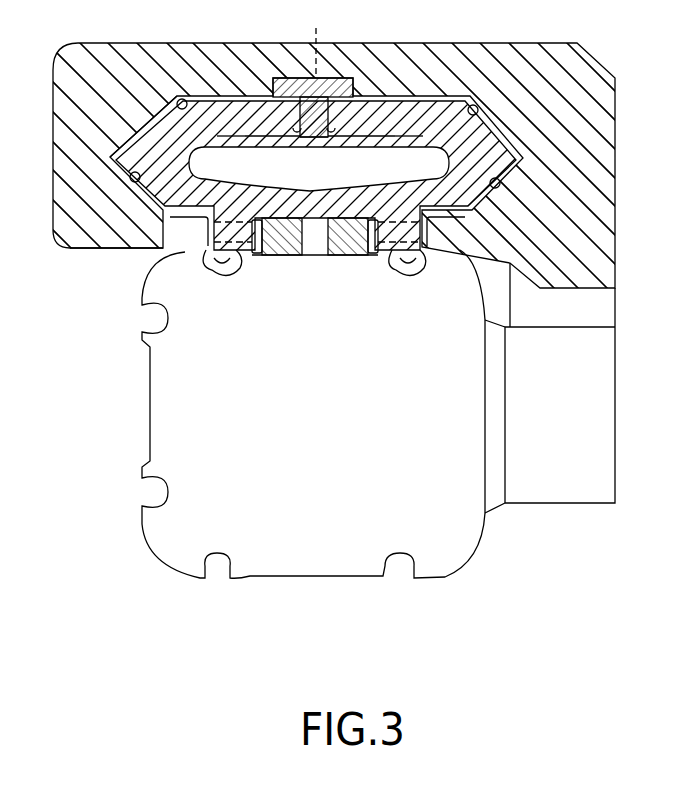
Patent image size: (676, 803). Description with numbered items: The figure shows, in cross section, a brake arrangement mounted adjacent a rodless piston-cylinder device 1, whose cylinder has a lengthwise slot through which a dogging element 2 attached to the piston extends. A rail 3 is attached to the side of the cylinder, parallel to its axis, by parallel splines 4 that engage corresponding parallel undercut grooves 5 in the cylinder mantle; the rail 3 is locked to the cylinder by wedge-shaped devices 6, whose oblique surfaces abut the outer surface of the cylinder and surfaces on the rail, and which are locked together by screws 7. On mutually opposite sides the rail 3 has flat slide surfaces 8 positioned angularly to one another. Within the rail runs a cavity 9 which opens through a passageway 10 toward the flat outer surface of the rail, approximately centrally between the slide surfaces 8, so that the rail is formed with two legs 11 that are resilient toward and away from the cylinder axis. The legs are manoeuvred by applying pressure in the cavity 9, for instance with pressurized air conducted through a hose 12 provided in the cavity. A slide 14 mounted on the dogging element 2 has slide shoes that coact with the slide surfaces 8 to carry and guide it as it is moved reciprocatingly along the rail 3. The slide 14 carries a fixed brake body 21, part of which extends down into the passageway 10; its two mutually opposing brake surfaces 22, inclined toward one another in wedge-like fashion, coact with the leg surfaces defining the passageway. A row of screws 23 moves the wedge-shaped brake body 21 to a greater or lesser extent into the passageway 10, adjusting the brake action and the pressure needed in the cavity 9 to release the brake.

The piston-cylinder device 1 is at (150, 410).
The dogging element 2 is at (614, 409).
The rail 3 is at (137, 132).
The parallel splines 4 is at (214, 271).
The undercut grooves 5 is at (229, 270).
The wedge-shaped devices 6 is at (300, 256).
The screws 7 is at (204, 251).
The slide surfaces 8 is at (182, 96).
The cavity 9 is at (290, 153).
The passageway 10 is at (276, 76).
The legs 11 is at (218, 130).
The hose 12 is at (328, 130).
The slide 14 is at (96, 248).
The brake body 21 is at (272, 76).
The brake surfaces 22 is at (272, 134).
The screws 23 is at (323, 16).